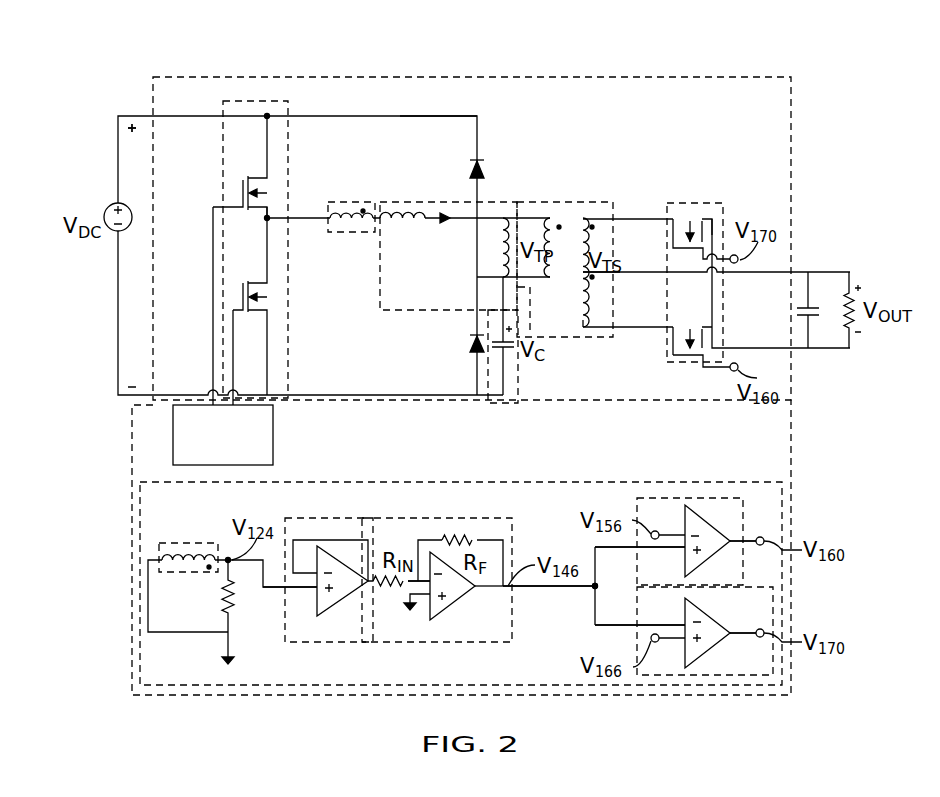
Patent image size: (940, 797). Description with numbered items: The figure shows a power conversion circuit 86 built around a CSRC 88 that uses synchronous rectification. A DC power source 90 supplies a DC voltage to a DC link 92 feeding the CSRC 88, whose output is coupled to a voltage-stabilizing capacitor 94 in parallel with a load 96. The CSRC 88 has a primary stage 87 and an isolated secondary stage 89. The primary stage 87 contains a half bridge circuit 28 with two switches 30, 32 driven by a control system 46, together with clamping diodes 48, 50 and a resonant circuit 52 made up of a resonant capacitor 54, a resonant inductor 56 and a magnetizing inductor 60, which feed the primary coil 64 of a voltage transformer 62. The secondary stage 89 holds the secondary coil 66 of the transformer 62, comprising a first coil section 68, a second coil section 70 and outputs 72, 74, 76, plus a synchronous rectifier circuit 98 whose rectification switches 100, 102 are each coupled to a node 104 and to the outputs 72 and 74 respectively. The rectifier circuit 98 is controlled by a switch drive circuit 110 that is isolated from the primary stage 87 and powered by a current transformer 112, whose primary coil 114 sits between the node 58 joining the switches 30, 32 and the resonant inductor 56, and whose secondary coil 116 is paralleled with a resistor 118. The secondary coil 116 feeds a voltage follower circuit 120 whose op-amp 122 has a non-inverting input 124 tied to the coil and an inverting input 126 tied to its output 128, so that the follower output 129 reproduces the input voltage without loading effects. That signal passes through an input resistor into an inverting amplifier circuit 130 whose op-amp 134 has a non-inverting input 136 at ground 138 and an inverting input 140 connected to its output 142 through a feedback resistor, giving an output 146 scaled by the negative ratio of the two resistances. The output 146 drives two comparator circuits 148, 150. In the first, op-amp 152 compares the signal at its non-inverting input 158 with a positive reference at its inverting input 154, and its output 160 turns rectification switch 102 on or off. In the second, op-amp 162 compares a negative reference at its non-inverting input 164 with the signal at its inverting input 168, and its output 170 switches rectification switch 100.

The power conversion circuit 86 is at (88, 103).
The CSRC 88 is at (472, 77).
The primary stage 87 is at (495, 117).
The secondary stage 89 is at (637, 142).
The DC link 92 is at (134, 116).
The DC power source 90 is at (106, 208).
The half bridge circuit 28 is at (257, 101).
The switch 30 is at (258, 178).
The switch 32 is at (258, 283).
The node 58 is at (266, 212).
The control system 46 is at (173, 434).
The clamping diode 48 is at (471, 161).
The clamping diode 50 is at (470, 342).
The resonant circuit 52 is at (452, 203).
The resonant capacitor 54 is at (512, 350).
The resonant inductor 56 is at (402, 216).
The magnetizing inductor 60 is at (500, 246).
The voltage transformer 62 is at (562, 202).
The primary coil 64 is at (548, 226).
The secondary coil 66 is at (584, 211).
The first coil section 68 is at (578, 270).
The second coil section 70 is at (583, 322).
The output 72 is at (602, 218).
The output 74 is at (602, 337).
The output 76 is at (594, 278).
The voltage-stabilizing capacitor 94 is at (813, 307).
The load 96 is at (857, 297).
The synchronous rectifier circuit 98 is at (690, 219).
The rectification switch 100 is at (710, 218).
The rectification switch 102 is at (690, 362).
The node 104 is at (712, 327).
The switch drive circuit 110 is at (461, 482).
The current transformer 112 is at (352, 232).
The primary coil 114 is at (348, 204).
The secondary coil 116 is at (198, 557).
The resistor 118 is at (227, 610).
The voltage follower circuit 120 is at (317, 517).
The operational amplifier 122 is at (340, 600).
The non-inverting input 124 is at (316, 588).
The inverting input 126 is at (330, 571).
The output 128 is at (368, 585).
The output 129 is at (381, 474).
The inverting amplifier circuit 130 is at (477, 518).
The op-amp 134 is at (448, 607).
The non-inverting input 136 is at (445, 598).
The ground 138 is at (413, 613).
The inverting input 140 is at (437, 572).
The output 142 is at (490, 586).
The output 146 is at (510, 588).
The comparator circuit 148 is at (660, 498).
The comparator circuit 150 is at (637, 648).
The op-amp 152 is at (688, 552).
The inverting input 154 is at (698, 533).
The non-inverting input 158 is at (695, 567).
The output 160 is at (757, 536).
The op-amp 162 is at (702, 647).
The non-inverting input 164 is at (707, 650).
The inverting input 168 is at (693, 622).
The output 170 is at (747, 627).